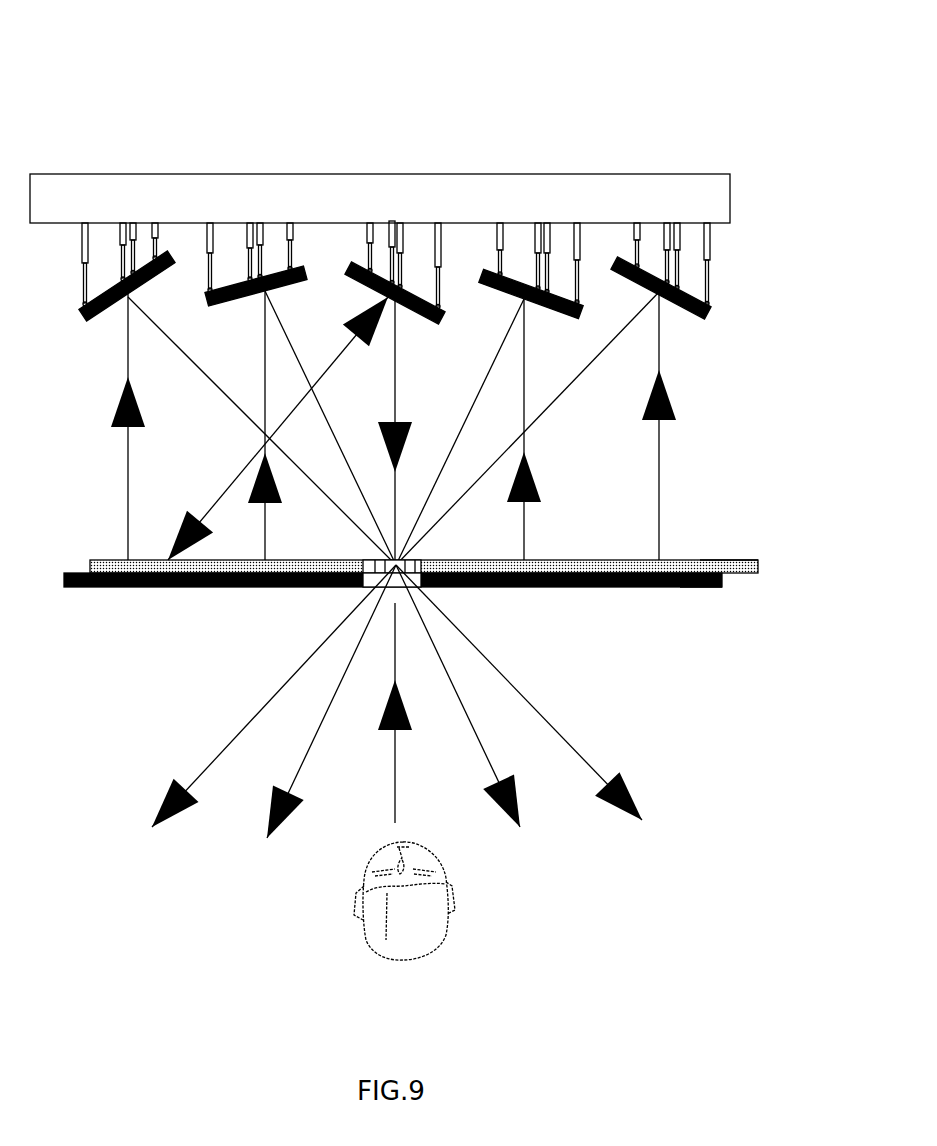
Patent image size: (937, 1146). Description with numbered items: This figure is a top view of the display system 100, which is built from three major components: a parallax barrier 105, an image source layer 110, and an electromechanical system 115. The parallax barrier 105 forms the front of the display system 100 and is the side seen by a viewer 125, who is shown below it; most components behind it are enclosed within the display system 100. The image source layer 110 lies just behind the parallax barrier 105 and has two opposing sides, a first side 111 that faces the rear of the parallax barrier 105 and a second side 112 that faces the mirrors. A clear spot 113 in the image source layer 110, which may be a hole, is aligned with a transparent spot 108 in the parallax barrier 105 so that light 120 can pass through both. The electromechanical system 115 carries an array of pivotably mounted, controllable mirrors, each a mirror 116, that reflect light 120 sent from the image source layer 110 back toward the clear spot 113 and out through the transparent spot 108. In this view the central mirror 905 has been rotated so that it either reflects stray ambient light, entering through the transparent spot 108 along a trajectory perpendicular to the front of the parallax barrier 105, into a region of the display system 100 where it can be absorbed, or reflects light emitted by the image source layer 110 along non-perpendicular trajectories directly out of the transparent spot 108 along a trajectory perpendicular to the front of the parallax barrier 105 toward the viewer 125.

The display system 100 is at (88, 78).
The central mirror 905 is at (355, 262).
The electromechanical system 115 is at (480, 186).
The mirror 116 is at (690, 307).
The light 120 is at (524, 538).
The image source layer 110 is at (680, 568).
The second side 112 is at (771, 534).
The first side 111 is at (759, 598).
The parallax barrier 105 is at (583, 580).
The transparent spot 108 is at (324, 604).
The clear spot 113 is at (367, 562).
The viewer 125 is at (435, 938).